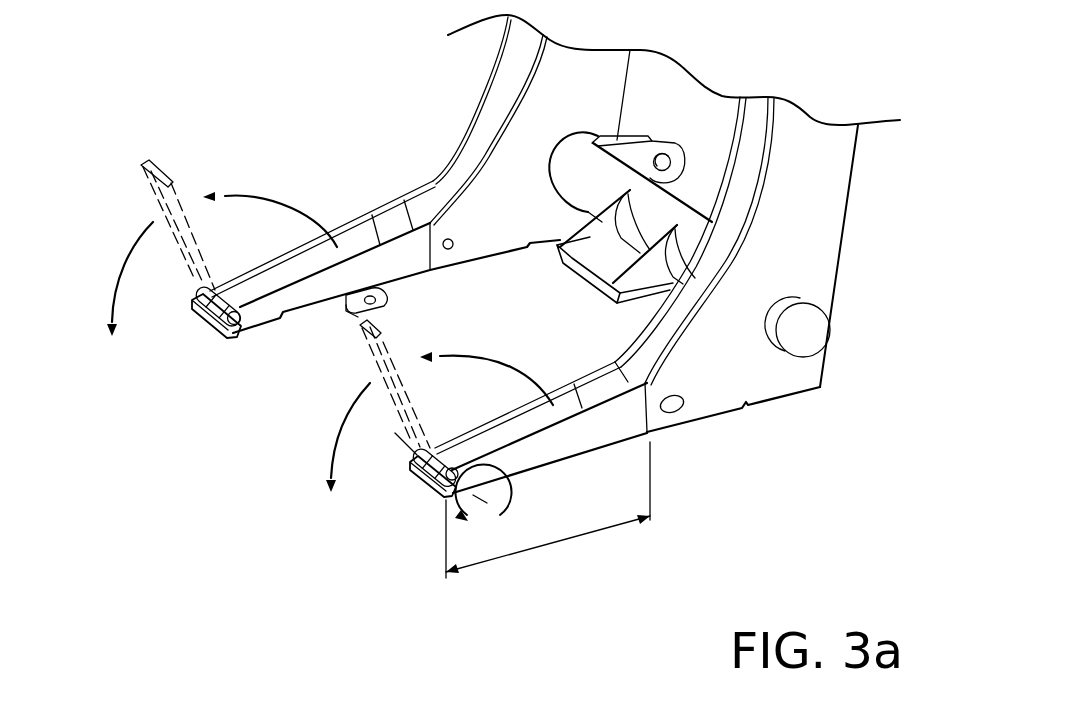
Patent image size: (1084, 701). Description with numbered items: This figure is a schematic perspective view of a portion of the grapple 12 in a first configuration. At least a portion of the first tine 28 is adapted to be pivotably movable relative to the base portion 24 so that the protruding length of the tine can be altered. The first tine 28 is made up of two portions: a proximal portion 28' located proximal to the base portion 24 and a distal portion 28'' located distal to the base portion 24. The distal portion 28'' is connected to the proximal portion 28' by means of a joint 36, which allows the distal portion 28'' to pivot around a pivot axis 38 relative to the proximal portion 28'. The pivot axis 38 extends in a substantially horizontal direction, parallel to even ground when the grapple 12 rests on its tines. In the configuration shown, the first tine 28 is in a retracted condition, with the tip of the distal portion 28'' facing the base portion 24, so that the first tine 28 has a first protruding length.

The grapple 12 is at (312, 92).
The base portion 24 is at (821, 437).
The first tine 28 is at (488, 496).
The proximal portion 28' is at (591, 455).
The distal portion 28'' is at (222, 287).
The joint 36 is at (410, 517).
The pivot axis 38 is at (397, 443).